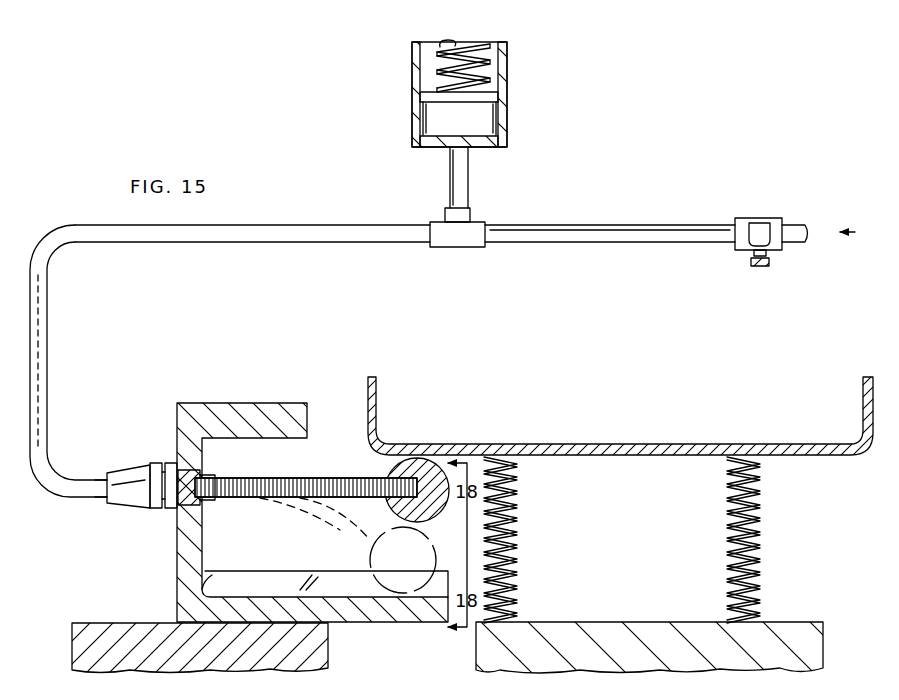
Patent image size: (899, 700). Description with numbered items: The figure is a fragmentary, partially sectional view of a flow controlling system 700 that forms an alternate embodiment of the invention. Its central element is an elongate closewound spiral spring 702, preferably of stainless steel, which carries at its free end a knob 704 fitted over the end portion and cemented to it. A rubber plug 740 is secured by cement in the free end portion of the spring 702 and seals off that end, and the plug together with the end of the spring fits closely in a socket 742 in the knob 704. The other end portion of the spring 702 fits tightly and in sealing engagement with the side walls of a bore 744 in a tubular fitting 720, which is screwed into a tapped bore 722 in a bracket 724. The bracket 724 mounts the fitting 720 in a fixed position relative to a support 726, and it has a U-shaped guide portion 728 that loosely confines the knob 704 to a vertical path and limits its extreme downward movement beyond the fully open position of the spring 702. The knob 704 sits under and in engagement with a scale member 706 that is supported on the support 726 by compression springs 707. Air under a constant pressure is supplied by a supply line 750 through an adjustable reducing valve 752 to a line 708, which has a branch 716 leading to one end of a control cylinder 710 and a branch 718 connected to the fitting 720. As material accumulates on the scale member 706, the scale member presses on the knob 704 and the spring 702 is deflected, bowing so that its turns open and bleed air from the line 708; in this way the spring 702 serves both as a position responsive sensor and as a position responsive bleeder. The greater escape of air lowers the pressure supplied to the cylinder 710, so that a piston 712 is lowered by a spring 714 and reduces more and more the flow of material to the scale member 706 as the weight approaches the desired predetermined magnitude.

The flow controlling system 700 is at (545, 158).
The elongate closewound spiral spring 702 is at (307, 471).
The knob 704 is at (437, 512).
The scale member 706 is at (583, 443).
The compression springs 707 is at (727, 550).
The line 708 is at (582, 225).
The control cylinder 710 is at (507, 139).
The piston 712 is at (482, 103).
The spring 714 is at (487, 56).
The branch 716 is at (449, 172).
The branch 718 is at (48, 348).
The tubular fitting 720 is at (172, 462).
The tapped bore 722 is at (205, 483).
The bracket 724 is at (177, 530).
The support 726 is at (520, 668).
The U-shaped guide portion 728 is at (312, 576).
The rubber plug 740 is at (425, 465).
The socket 742 is at (388, 507).
The bore 744 is at (212, 497).
The supply line 750 is at (797, 225).
The adjustable reducing valve 752 is at (761, 218).